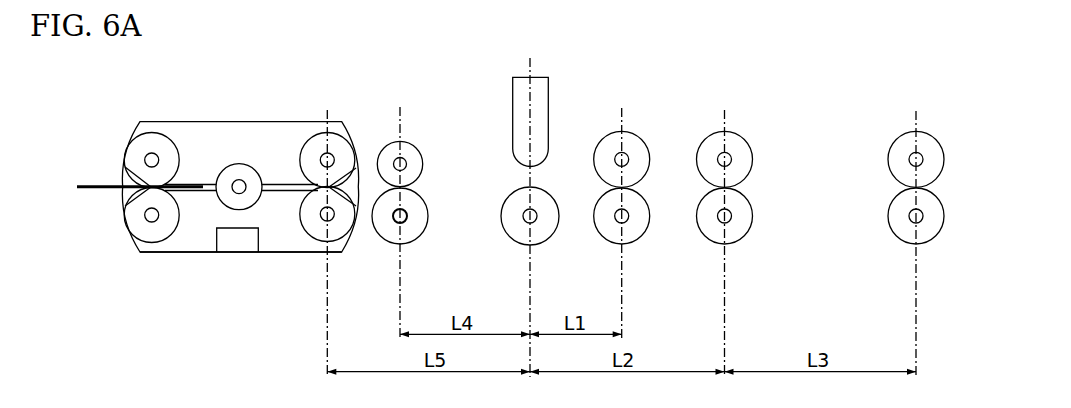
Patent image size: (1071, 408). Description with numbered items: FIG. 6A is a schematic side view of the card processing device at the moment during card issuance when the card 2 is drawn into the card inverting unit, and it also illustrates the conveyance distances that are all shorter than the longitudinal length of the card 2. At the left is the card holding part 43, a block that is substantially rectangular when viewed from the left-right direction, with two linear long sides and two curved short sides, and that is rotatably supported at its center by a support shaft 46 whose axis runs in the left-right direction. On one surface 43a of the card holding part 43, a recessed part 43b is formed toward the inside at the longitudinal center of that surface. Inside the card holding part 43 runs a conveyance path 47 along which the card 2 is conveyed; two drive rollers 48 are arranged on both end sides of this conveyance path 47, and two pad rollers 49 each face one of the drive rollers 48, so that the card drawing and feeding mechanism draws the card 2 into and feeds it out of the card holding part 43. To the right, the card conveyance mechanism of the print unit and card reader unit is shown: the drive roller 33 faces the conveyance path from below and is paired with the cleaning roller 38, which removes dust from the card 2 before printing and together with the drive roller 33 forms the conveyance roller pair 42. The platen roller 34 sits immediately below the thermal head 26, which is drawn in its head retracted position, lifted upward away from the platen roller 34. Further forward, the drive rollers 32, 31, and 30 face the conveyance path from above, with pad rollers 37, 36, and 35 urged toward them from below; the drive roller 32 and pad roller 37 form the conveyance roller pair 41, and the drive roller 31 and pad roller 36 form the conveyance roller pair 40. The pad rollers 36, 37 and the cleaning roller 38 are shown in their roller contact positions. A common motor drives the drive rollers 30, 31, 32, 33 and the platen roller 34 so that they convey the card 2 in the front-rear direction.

The card 2 is at (193, 186).
The thermal head 26 is at (548, 120).
The drive roller 30 is at (888, 160).
The drive roller 31 is at (752, 158).
The drive roller 32 is at (650, 160).
The drive roller 33 is at (428, 216).
The platen roller 34 is at (500, 216).
The pad roller 35 is at (888, 217).
The pad roller 36 is at (752, 217).
The pad roller 37 is at (650, 217).
The cleaning roller 38 is at (423, 165).
The conveyance roller pair 40 is at (786, 155).
The conveyance roller pair 41 is at (650, 164).
The conveyance roller pair 42 is at (424, 199).
The card holding part 43 is at (312, 122).
The one surface 43a is at (192, 252).
The recessed part 43b is at (250, 242).
The support shaft 46 is at (239, 180).
The conveyance path 47 is at (283, 185).
The drive roller 48 is at (152, 133).
The pad roller 49 is at (152, 242).